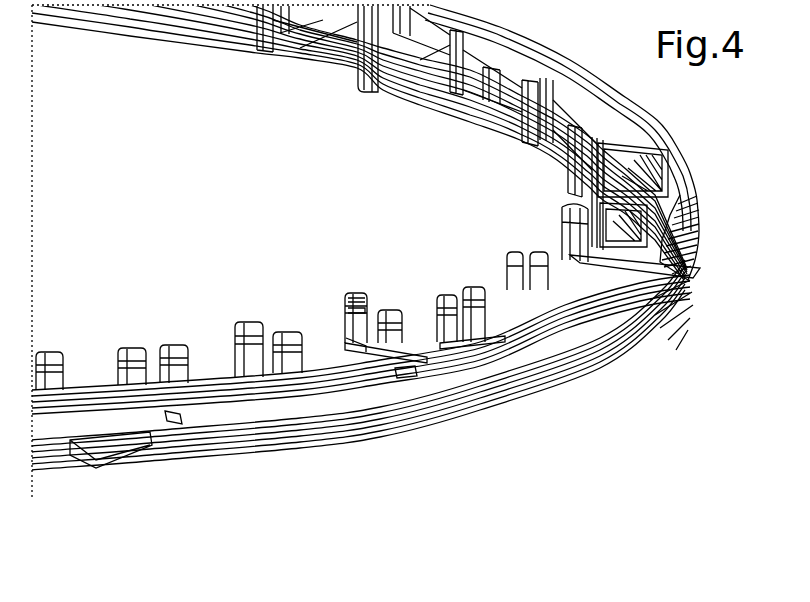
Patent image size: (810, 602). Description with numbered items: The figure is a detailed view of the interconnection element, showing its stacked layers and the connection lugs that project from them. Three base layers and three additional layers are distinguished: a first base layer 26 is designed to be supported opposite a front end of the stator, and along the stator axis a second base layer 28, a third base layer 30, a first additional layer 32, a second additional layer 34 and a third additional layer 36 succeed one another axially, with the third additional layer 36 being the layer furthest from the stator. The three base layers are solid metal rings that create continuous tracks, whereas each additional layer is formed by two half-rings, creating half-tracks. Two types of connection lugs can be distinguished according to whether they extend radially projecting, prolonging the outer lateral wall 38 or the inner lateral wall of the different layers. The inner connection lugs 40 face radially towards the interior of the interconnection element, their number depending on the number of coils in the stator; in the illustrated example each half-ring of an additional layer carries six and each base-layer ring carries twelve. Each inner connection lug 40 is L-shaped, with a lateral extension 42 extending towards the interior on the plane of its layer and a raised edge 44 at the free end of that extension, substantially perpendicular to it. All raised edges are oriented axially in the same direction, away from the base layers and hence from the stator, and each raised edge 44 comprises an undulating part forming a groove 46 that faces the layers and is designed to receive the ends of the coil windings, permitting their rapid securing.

The first base layer 26 is at (260, 460).
The second base layer 28 is at (338, 428).
The third base layer 30 is at (372, 398).
The first additional layer 32 is at (553, 341).
The second additional layer 34 is at (668, 317).
The third additional layer 36 is at (678, 165).
The outer lateral wall 38 is at (707, 232).
The inner connection lug 40 is at (380, 282).
The lateral extension 42 is at (332, 355).
The raised edge 44 is at (360, 290).
The groove 46 is at (343, 312).